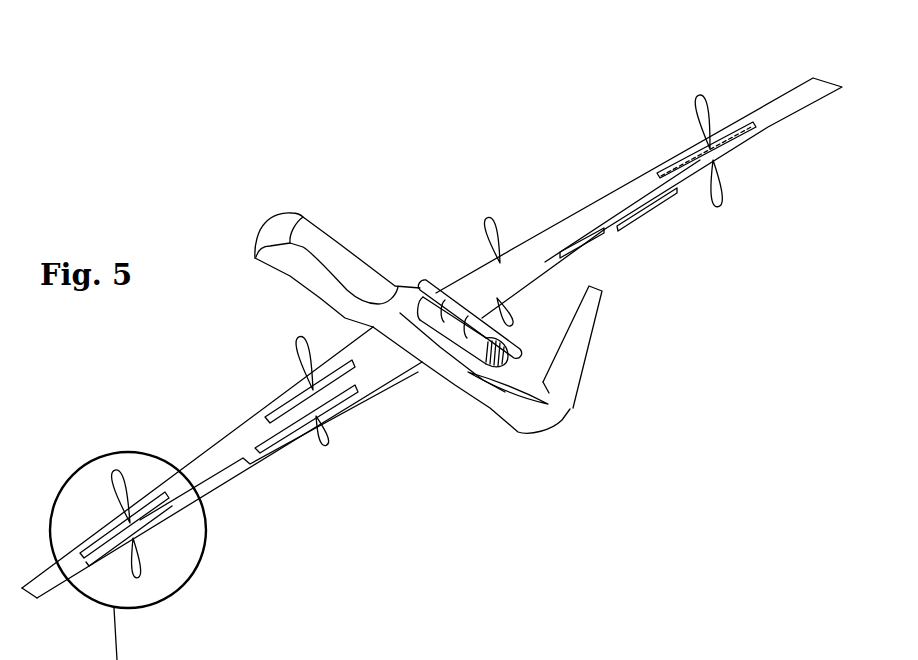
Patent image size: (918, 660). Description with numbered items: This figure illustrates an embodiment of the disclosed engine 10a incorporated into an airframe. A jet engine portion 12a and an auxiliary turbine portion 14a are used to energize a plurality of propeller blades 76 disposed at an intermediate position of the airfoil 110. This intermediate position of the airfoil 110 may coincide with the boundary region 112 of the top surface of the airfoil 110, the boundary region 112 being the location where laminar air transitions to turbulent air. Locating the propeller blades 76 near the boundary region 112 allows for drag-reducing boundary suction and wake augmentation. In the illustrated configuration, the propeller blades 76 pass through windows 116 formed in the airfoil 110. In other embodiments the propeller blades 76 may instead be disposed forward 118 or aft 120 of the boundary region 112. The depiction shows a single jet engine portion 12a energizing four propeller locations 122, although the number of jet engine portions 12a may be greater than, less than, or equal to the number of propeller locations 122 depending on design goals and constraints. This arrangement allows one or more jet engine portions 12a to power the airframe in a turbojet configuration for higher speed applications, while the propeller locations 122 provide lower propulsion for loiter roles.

The engine 10a is at (232, 130).
The airfoil 110 is at (790, 100).
The boundary region 112 is at (740, 125).
The windows 116 is at (537, 260).
The propeller blades 76 is at (690, 100).
The forward 118 is at (303, 177).
The jet engine portion 12a is at (510, 382).
The auxiliary turbine portion 14a is at (529, 394).
The aft 120 is at (649, 443).
The propeller locations 122 is at (187, 585).